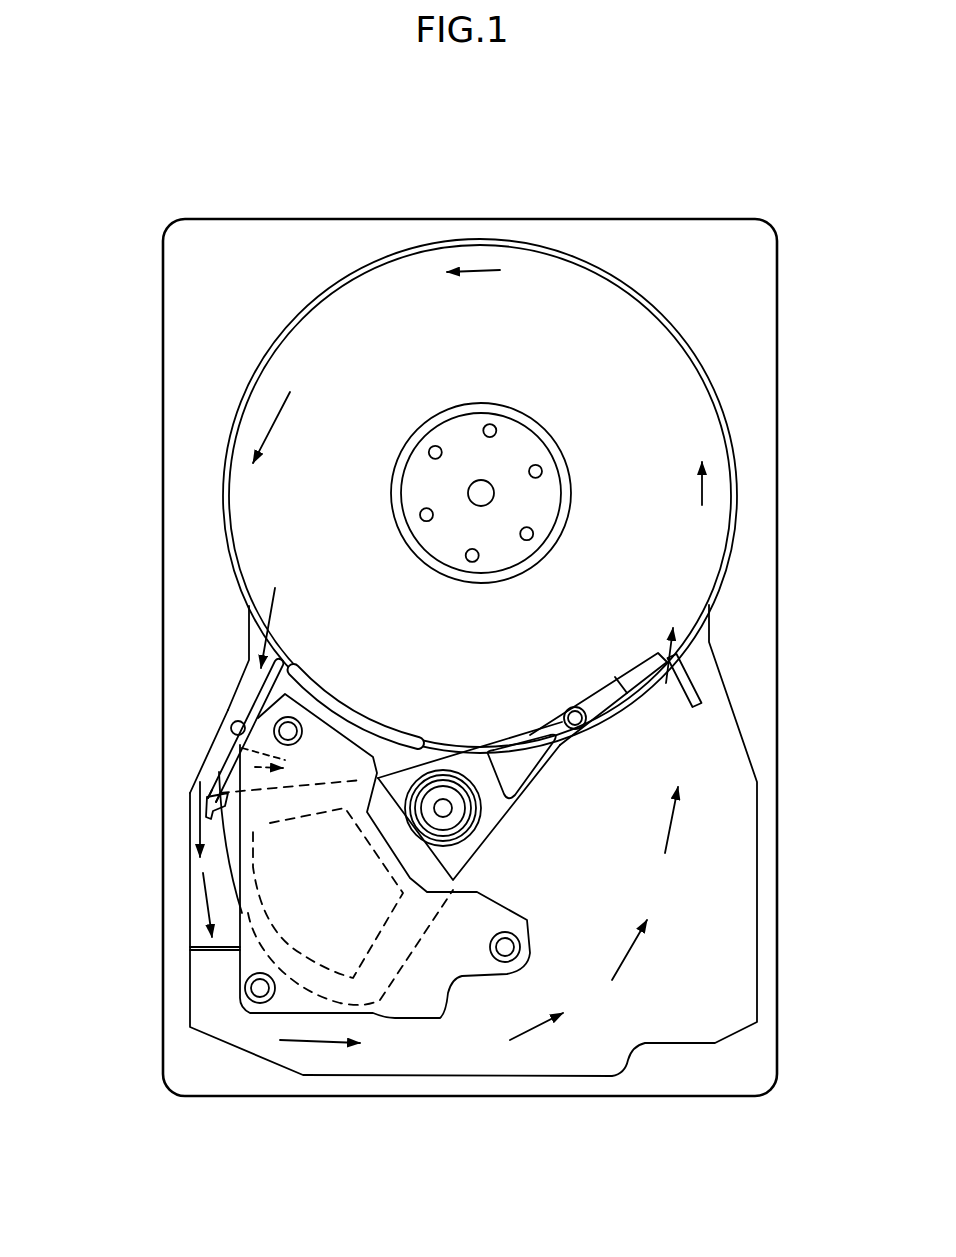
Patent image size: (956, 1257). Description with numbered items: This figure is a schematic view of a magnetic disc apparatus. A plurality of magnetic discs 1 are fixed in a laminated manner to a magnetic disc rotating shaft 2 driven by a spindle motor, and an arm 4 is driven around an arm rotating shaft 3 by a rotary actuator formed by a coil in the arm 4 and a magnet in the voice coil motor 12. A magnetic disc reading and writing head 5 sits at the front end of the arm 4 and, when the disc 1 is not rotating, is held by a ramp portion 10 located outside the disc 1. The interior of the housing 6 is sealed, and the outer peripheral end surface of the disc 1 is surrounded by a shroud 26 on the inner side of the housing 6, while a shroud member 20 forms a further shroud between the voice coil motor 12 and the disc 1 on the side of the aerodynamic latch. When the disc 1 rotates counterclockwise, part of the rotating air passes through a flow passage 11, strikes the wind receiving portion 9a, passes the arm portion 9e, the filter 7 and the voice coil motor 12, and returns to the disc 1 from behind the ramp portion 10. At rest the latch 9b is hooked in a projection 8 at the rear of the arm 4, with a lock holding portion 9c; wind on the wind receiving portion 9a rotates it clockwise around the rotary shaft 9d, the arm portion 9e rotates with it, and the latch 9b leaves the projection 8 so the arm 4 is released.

The magnetic disc 1 is at (702, 430).
The magnetic disc rotating shaft 2 is at (486, 487).
The arm rotating shaft 3 is at (450, 813).
The arm 4 is at (540, 779).
The magnetic disc reading and writing head 5 is at (643, 677).
The housing 6 is at (190, 328).
The filter 7 is at (207, 948).
The projection 8 is at (208, 808).
The wind receiving portion 9a is at (270, 687).
The latch 9b is at (205, 826).
The lock holding portion 9c is at (230, 765).
The rotary shaft 9d is at (231, 722).
The arm portion 9e is at (223, 768).
The ramp portion 10 is at (699, 697).
The flow passage 11 is at (247, 673).
The voice coil motor 12 is at (323, 750).
The shroud member 20 is at (407, 732).
The shroud 26 is at (240, 695).